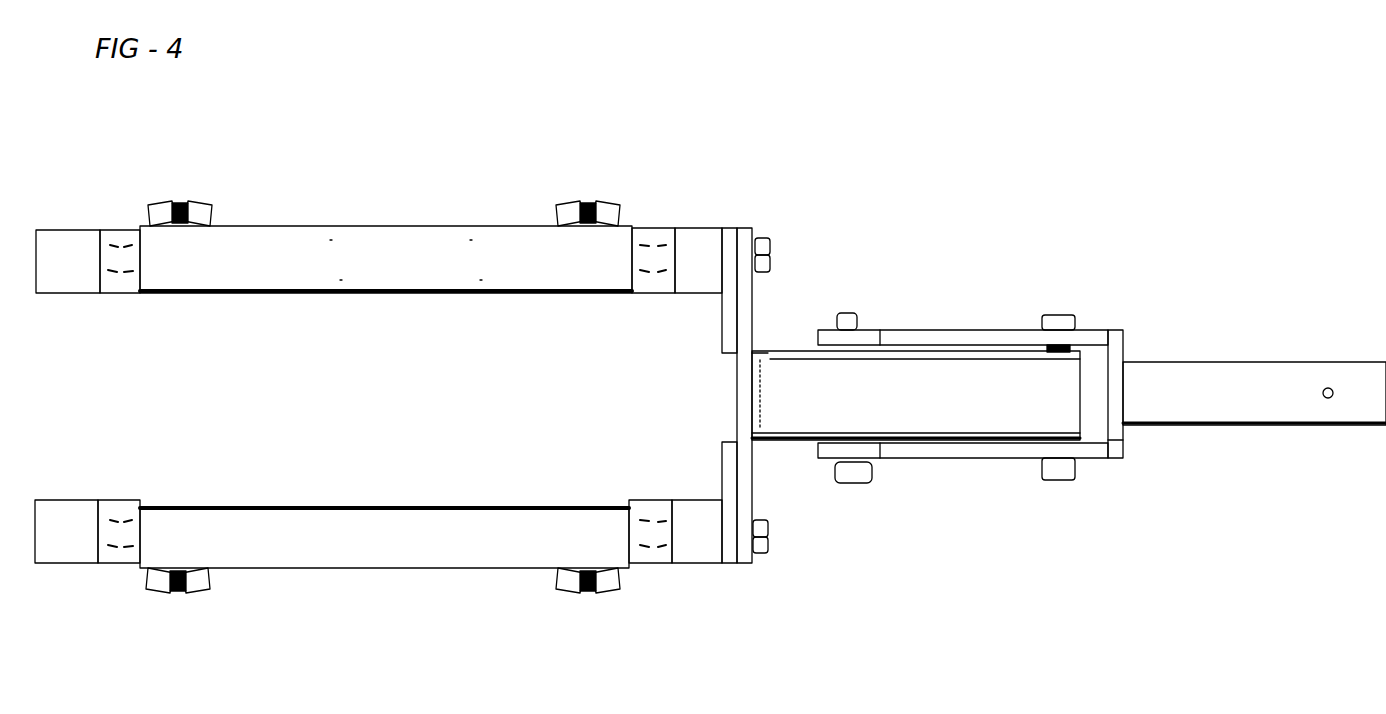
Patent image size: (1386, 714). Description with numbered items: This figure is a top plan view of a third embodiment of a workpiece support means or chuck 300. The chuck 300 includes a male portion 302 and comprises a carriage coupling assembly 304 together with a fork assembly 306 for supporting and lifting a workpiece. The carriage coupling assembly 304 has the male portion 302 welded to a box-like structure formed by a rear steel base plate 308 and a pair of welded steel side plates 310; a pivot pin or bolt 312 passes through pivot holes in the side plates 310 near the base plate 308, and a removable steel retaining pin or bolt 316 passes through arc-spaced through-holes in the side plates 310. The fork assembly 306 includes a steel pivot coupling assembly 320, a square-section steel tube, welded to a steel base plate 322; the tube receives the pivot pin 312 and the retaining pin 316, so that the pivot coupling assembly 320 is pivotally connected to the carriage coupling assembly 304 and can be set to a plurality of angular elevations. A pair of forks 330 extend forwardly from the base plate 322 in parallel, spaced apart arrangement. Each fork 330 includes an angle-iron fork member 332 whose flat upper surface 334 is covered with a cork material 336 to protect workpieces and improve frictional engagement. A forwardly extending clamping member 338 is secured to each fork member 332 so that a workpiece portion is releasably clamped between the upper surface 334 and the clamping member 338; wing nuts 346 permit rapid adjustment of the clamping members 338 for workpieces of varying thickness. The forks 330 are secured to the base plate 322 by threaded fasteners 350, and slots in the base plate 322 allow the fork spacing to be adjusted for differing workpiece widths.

The third embodiment of workpiece support means or chuck 300 is at (858, 240).
The male portion 302 is at (1210, 372).
The carriage coupling assembly 304 is at (1088, 330).
The fork assembly 306 is at (702, 232).
The rear steel base plate 308 is at (1124, 440).
The side plates 310 is at (912, 333).
The pivot pin or bolt 312 is at (1048, 352).
The retaining pin or bolt 316 is at (870, 483).
The pivot coupling assembly 320 is at (790, 428).
The base plate 322 is at (745, 365).
The forks 330 is at (125, 293).
The fork member 332 is at (240, 293).
The upper surface 334 is at (375, 293).
The cork material 336 is at (485, 293).
The clamping member 338 is at (568, 272).
The wing nuts 346 is at (212, 205).
The threaded fasteners 350 is at (772, 252).